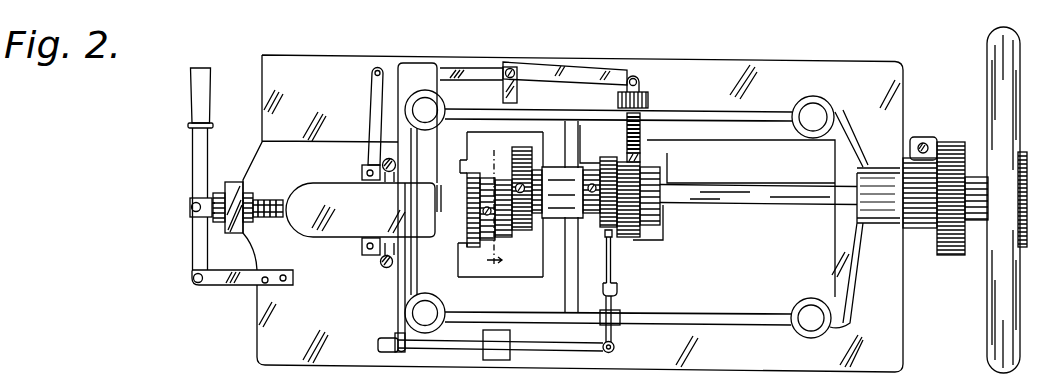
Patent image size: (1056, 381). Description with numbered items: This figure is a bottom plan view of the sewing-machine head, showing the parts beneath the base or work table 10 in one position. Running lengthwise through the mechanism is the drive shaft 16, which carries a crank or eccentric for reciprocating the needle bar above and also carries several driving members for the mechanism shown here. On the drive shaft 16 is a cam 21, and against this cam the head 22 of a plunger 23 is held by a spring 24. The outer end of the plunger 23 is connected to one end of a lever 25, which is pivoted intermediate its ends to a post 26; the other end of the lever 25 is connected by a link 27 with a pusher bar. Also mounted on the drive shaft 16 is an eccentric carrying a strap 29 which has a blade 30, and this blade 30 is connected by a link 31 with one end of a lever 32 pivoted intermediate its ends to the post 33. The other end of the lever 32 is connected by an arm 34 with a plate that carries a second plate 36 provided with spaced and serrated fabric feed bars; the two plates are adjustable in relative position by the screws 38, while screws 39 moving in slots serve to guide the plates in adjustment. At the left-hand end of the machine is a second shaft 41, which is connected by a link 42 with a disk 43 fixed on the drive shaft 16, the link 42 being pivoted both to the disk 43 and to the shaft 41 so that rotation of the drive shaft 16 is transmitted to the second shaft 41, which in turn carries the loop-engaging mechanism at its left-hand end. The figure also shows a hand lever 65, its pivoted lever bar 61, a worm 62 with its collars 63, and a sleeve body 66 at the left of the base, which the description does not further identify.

The base or work table 10 is at (767, 77).
The drive shaft 16 is at (792, 205).
The cam 21 is at (630, 240).
The head of plunger 22 is at (630, 156).
The plunger 23 is at (641, 84).
The spring 24 is at (655, 133).
The lever 25 is at (582, 73).
The post 26 is at (503, 91).
The link 27 is at (372, 91).
The strap 29 is at (620, 150).
The blade 30 is at (614, 284).
The link 31 is at (615, 338).
The lever 32 is at (563, 348).
The post 33 is at (498, 330).
The arm 34 is at (397, 307).
The second plate 36 is at (397, 187).
The screws 38 is at (366, 159).
The screws 39 is at (380, 262).
The second shaft 41 is at (467, 162).
The link 42 is at (503, 238).
The disk 43 is at (523, 147).
The lever 61 is at (205, 184).
The worm 62 is at (274, 200).
The collar 63 is at (257, 195).
The handle 65 is at (192, 104).
The sleeve body 66 is at (332, 233).